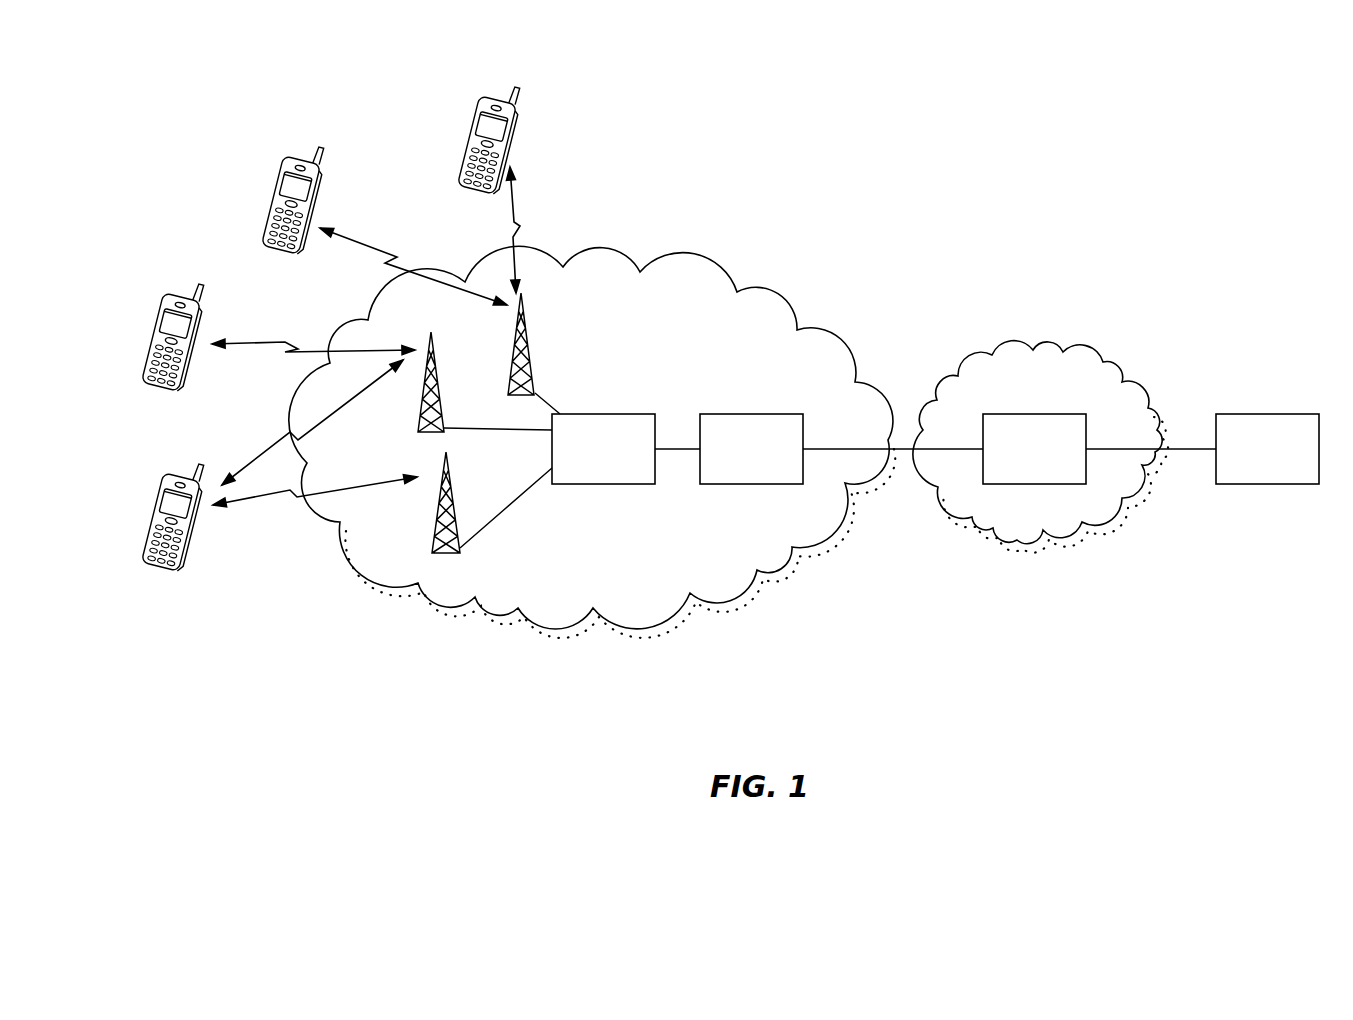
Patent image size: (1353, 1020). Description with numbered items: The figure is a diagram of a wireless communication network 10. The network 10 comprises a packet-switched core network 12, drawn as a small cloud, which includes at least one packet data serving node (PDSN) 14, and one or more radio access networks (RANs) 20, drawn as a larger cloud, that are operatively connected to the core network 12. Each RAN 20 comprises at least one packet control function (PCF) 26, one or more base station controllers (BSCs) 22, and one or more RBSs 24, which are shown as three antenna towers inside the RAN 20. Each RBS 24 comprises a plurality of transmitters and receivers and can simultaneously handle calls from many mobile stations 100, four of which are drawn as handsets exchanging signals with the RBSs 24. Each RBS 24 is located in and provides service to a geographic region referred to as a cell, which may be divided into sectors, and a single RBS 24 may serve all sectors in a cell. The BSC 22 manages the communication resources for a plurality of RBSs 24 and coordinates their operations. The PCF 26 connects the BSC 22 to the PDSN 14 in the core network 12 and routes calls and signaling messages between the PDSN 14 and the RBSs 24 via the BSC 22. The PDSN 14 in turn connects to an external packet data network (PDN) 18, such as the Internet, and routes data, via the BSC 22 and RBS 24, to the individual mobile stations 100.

The network 10 is at (1148, 172).
The packet-switched core network 12 is at (1115, 366).
The packet data serving node 14 is at (1065, 414).
The packet data network 18 is at (1256, 475).
The radio access network 20 is at (772, 292).
The base station controller 22 is at (610, 414).
The RBS 24 is at (528, 342).
The packet control function 26 is at (765, 414).
The mobile station 100 is at (470, 136).